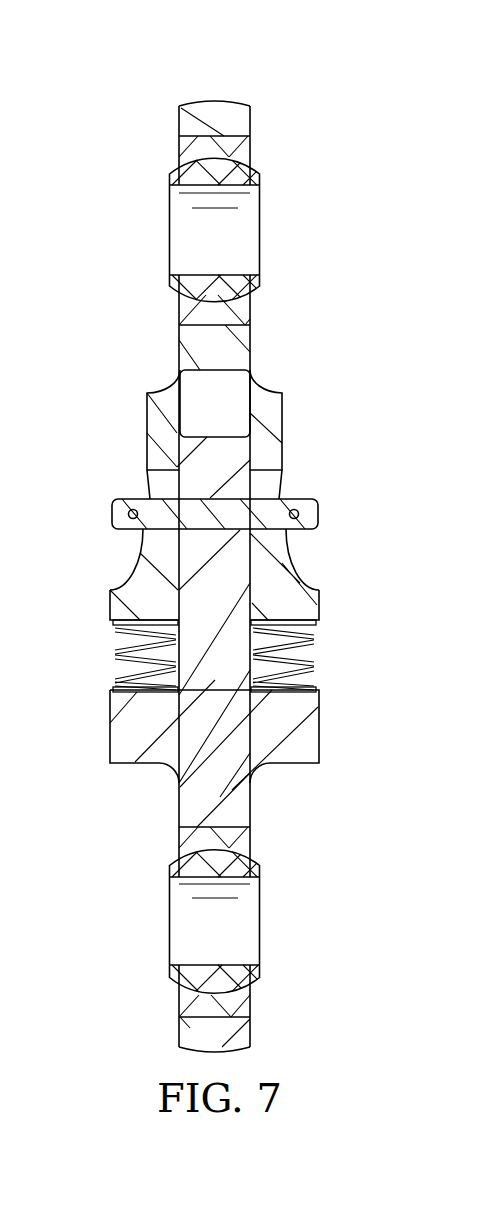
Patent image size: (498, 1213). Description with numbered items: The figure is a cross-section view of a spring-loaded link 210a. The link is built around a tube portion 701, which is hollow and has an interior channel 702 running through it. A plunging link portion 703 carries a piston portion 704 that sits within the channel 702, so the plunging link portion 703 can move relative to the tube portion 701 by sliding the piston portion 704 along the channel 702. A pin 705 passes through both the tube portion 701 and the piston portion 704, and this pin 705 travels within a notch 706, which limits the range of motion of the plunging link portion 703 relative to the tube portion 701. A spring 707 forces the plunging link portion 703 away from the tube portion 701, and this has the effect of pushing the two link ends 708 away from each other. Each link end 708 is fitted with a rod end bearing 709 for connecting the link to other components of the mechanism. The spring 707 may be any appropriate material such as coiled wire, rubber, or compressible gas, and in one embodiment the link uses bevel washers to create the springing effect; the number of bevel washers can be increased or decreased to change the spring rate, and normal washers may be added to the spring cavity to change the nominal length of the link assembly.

The spring-loaded link 210a is at (123, 69).
The tube portion 701 is at (120, 607).
The interior channel 702 is at (237, 385).
The plunging link portion 703 is at (120, 740).
The piston portion 704 is at (238, 568).
The pin 705 is at (318, 512).
The notch 706 is at (155, 483).
The spring 707 is at (313, 652).
The link end 708 is at (197, 113).
The rod end bearing 709 is at (168, 181).